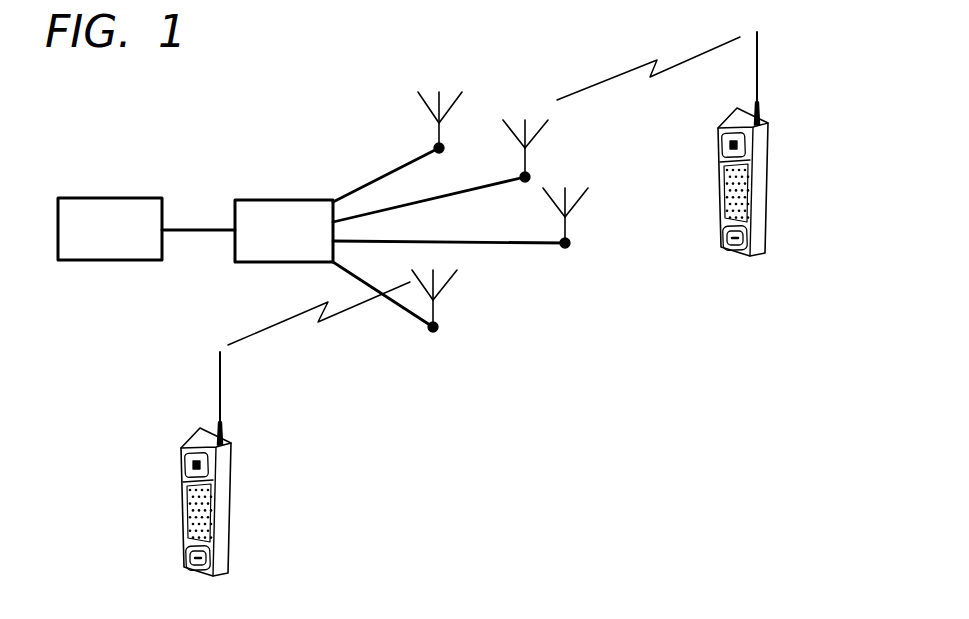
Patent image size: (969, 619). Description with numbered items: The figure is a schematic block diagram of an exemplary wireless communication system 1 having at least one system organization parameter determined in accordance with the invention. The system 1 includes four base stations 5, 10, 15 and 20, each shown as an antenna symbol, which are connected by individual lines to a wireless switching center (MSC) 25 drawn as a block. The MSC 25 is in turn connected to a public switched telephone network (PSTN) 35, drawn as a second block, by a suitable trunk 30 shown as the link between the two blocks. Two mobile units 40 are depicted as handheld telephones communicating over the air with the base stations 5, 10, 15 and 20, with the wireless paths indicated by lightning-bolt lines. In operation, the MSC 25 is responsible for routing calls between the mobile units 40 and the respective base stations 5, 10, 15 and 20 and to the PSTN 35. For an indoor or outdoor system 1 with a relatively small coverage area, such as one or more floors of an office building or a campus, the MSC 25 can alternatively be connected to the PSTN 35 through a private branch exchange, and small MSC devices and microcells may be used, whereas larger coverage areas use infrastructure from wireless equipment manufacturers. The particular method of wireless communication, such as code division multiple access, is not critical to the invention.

The wireless communication system 1 is at (209, 105).
The base station 5 is at (420, 102).
The base station 10 is at (548, 122).
The base station 15 is at (583, 205).
The base station 20 is at (447, 293).
The wireless switching center (MSC) 25 is at (283, 203).
The trunk 30 is at (207, 228).
The public switched telephone network (PSTN) 35 is at (126, 200).
The mobile unit 40 is at (770, 183).